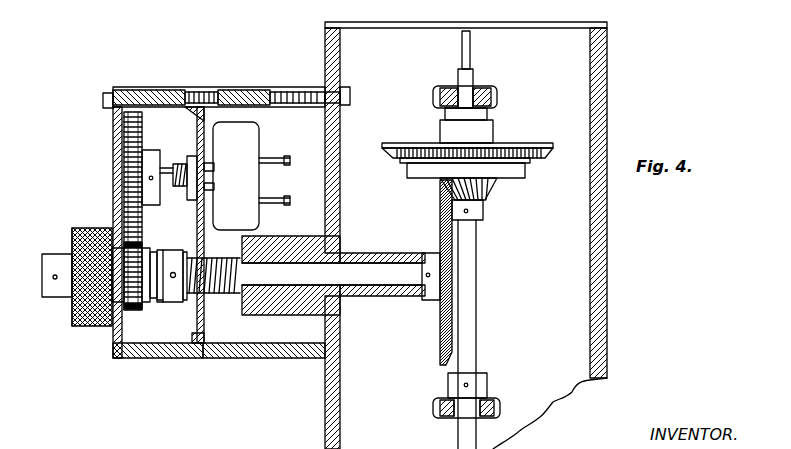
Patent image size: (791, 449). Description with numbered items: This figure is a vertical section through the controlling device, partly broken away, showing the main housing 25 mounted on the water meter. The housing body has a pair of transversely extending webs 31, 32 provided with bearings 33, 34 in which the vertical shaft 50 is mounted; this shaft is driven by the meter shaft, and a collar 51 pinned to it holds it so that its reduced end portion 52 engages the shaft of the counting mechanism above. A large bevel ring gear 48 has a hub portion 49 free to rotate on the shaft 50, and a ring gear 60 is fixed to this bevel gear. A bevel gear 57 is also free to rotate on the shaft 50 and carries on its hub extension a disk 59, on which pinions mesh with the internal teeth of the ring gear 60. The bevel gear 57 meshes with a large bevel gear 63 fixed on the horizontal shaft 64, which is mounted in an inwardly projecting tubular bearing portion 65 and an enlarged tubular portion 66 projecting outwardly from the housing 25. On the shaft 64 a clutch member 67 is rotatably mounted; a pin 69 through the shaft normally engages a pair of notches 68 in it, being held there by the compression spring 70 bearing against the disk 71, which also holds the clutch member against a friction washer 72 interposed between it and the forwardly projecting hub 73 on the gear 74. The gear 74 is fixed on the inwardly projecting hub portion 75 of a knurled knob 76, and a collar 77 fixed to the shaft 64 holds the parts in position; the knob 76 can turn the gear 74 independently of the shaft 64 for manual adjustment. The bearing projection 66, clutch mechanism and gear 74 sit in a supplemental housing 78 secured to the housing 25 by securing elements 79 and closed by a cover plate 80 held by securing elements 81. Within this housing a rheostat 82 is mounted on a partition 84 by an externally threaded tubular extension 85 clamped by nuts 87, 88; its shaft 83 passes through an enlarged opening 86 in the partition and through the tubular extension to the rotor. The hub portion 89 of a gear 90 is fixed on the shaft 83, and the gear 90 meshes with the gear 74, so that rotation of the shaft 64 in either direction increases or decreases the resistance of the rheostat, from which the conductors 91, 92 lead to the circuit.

The main housing 25 is at (603, 108).
The transversely extending web 31 is at (502, 404).
The transversely extending web 32 is at (497, 97).
The bearing 33 is at (453, 417).
The bearing 34 is at (476, 88).
The bevel ring gear 48 is at (392, 150).
The hub portion 49 is at (480, 131).
The shaft 50 is at (468, 324).
The collar 51 is at (482, 384).
The reduced end portion 52 is at (472, 45).
The bevel gear 57 is at (492, 190).
The disk 59 is at (522, 168).
The ring gear 60 is at (532, 154).
The large bevel gear 63 is at (450, 269).
The shaft 64 is at (369, 280).
The tubular bearing portion 65 is at (364, 256).
The enlarged tubular portion 66 is at (278, 302).
The clutch member 67 is at (184, 302).
The notches 68 is at (173, 272).
The pin 69 is at (160, 300).
The compression spring 70 is at (215, 296).
The disk 71 is at (187, 353).
The friction washer 72 is at (153, 249).
The hub 73 is at (133, 309).
The gear 74 is at (123, 270).
The hub portion 75 is at (72, 236).
The knurled knob 76 is at (72, 322).
The collar 77 is at (56, 294).
The supplemental housing 78 is at (275, 347).
The securing elements 79 is at (348, 95).
The cover plate 80 is at (116, 152).
The securing elements 81 is at (103, 98).
The rheostat 82 is at (253, 148).
The shaft 83 is at (175, 167).
The partition 84 is at (188, 100).
The tubular extension 85 is at (185, 166).
The enlarged opening 86 is at (207, 165).
The nut 87 is at (236, 94).
The nut 88 is at (212, 187).
The hub portion 89 is at (124, 163).
The gear 90 is at (131, 110).
The conductor 91 is at (280, 204).
The conductor 92 is at (282, 164).